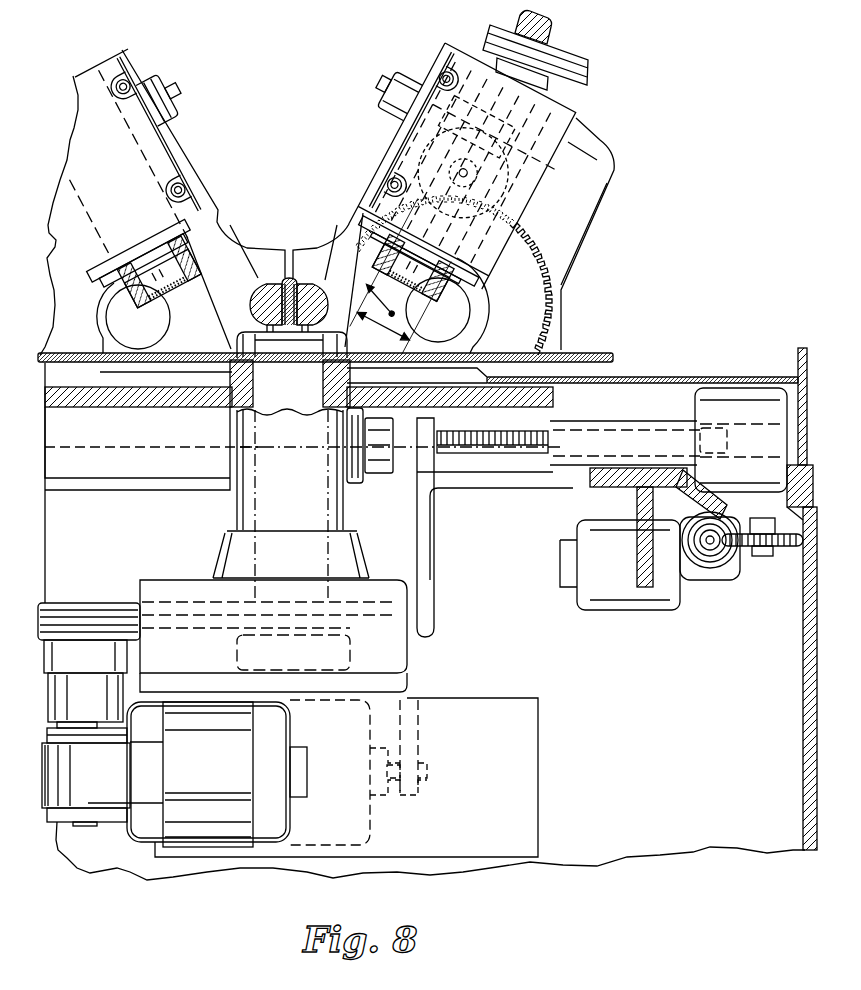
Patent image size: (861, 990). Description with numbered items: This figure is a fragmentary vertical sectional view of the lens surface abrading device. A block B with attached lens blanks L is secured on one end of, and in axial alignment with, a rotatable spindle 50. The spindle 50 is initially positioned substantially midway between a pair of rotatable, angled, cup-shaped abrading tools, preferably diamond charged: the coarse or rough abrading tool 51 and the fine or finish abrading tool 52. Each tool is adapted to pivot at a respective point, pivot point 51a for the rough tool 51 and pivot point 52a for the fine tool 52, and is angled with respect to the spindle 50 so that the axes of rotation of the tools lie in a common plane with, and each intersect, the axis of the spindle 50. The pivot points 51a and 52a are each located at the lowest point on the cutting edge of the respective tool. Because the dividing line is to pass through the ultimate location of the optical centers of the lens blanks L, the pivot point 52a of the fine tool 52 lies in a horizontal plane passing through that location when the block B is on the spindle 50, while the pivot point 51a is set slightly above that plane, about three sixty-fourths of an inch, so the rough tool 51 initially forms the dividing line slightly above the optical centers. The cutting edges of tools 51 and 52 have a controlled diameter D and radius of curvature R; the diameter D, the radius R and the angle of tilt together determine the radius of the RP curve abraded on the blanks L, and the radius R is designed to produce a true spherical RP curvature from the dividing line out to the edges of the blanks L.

The fine abrading tool 52 is at (129, 295).
The pivot point 52a is at (140, 321).
The spindle 50 is at (278, 330).
The lens blanks L is at (252, 302).
The block B is at (298, 278).
The radius of curvature R is at (391, 312).
The diameter D is at (383, 326).
The rough abrading tool 51 is at (453, 289).
The pivot point 51a is at (455, 305).